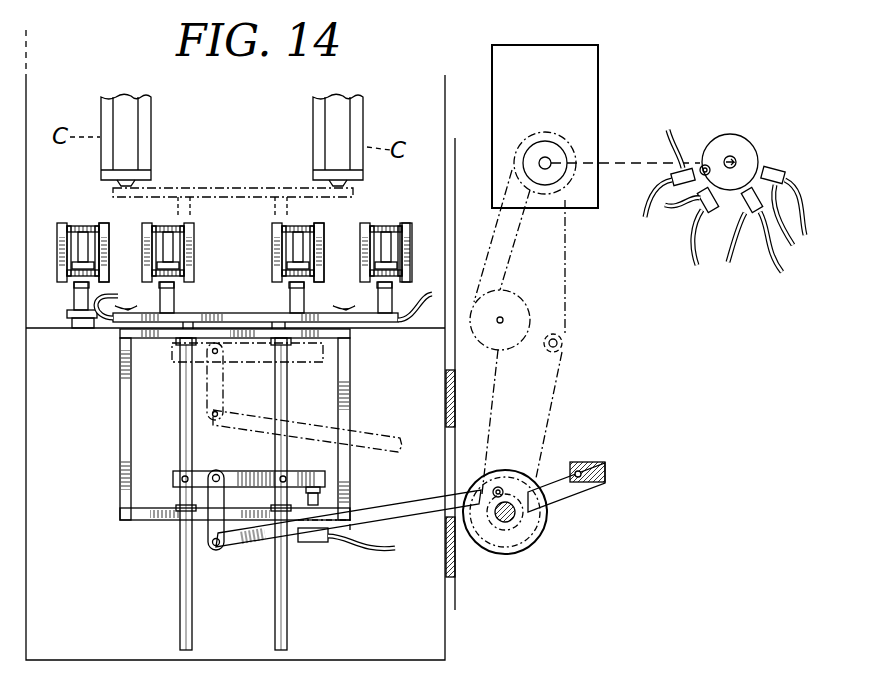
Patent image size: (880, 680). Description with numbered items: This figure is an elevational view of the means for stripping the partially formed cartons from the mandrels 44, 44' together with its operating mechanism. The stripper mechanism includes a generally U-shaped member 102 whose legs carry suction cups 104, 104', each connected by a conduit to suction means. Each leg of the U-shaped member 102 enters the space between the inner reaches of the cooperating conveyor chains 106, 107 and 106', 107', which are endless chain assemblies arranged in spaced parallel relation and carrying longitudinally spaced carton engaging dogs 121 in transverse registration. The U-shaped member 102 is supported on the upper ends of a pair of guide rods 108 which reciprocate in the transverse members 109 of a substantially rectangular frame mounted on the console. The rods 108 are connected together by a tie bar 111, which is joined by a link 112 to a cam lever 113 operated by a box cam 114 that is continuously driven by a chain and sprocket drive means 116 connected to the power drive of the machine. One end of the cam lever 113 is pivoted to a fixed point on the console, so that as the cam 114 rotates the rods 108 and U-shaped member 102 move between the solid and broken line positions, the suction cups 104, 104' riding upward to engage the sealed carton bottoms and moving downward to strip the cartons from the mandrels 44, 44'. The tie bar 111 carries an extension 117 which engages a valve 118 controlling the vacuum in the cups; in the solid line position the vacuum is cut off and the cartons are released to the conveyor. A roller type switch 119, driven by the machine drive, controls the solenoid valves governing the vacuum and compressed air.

The mandrel 44 is at (154, 140).
The mandrel 44' is at (365, 140).
The U-shaped member 102 is at (250, 186).
The suction cup 104 is at (128, 296).
The suction cup 104' is at (376, 297).
The conveyor chain 106 is at (83, 259).
The conveyor chain 107 is at (154, 255).
The conveyor chain 106' is at (319, 255).
The conveyor chain 107' is at (395, 249).
The carton engaging dog 121 is at (108, 247).
The guide rod 108 is at (179, 405).
The transverse member 109 is at (148, 340).
The tie bar 111 is at (250, 470).
The link 112 is at (205, 530).
The cam lever 113 is at (400, 498).
The box cam 114 is at (547, 530).
The chain and sprocket drive means 116 is at (553, 404).
The extension 117 is at (300, 470).
The valve 118 is at (322, 497).
The roller type switch 119 is at (735, 142).